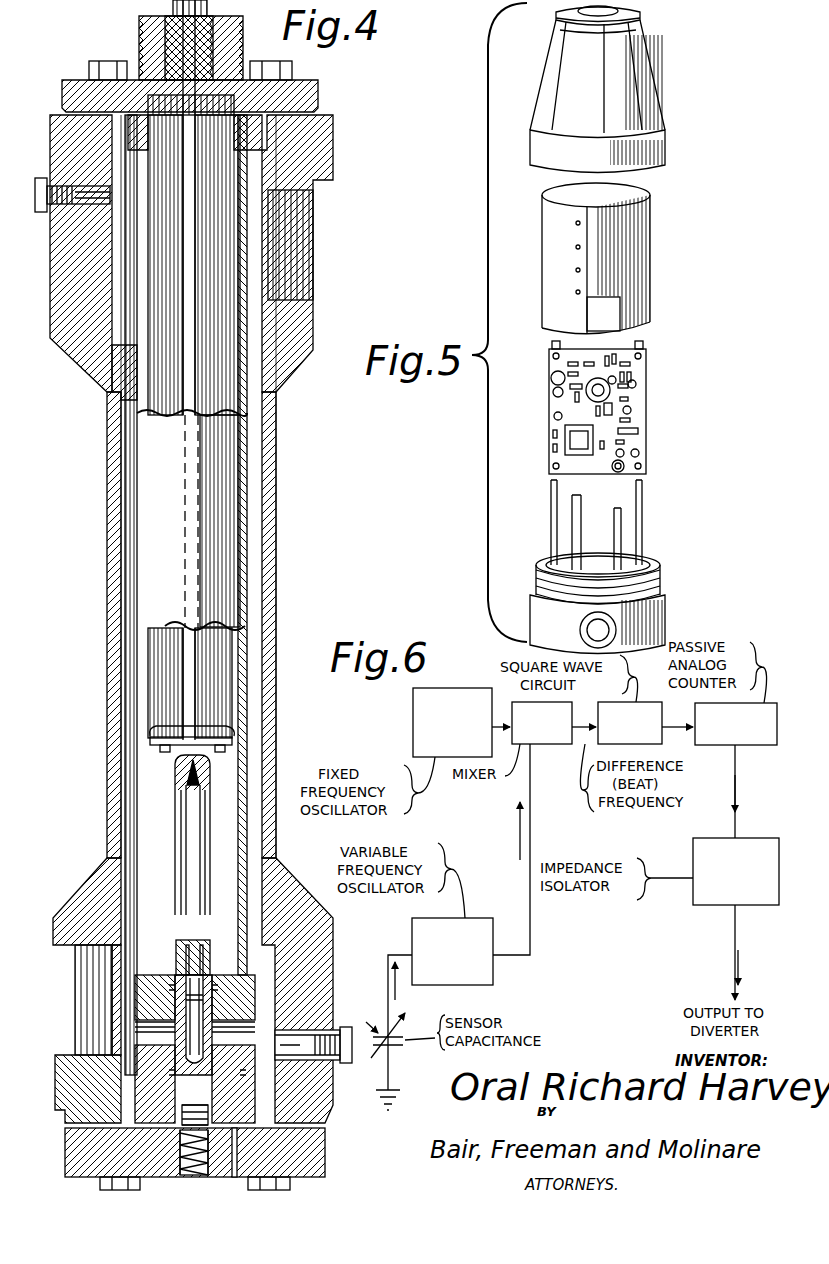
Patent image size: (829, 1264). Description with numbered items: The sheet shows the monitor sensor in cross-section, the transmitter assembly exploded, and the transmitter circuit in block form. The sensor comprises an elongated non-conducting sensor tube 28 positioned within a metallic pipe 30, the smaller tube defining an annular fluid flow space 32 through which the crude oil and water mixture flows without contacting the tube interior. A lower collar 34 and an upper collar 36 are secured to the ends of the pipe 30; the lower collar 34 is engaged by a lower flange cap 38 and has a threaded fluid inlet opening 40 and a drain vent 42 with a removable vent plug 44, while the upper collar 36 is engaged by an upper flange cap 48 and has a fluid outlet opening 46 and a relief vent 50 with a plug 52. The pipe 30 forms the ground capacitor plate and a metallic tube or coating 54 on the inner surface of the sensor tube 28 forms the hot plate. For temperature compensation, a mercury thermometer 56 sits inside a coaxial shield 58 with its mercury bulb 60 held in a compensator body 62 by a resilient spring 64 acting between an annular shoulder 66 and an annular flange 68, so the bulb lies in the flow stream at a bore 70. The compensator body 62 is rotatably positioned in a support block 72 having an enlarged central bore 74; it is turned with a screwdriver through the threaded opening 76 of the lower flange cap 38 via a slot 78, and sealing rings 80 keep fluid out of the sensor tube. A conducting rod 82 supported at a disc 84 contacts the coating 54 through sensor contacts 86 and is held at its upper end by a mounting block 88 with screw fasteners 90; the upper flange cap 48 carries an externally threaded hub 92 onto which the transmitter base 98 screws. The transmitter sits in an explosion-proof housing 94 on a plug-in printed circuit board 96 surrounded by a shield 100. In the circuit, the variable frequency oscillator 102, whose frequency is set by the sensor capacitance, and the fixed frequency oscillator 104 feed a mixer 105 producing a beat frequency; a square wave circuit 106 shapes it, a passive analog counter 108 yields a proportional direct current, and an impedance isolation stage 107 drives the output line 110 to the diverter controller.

In FIG. 4, the sensor tube 28 is at (240, 547).
In FIG. 4, the metallic pipe 30 is at (276, 592).
In FIG. 4, the annular fluid flow space 32 is at (128, 545).
In FIG. 4, the lower collar 34 is at (335, 944).
In FIG. 4, the upper collar 36 is at (334, 155).
In FIG. 4, the lower flange cap 38 is at (65, 1147).
In FIG. 4, the fluid inlet opening 40 is at (75, 1028).
In FIG. 4, the drain vent 42 is at (318, 1035).
In FIG. 4, the vent plug 44 is at (346, 1065).
In FIG. 4, the fluid outlet opening 46 is at (305, 268).
In FIG. 4, the upper flange cap 48 is at (318, 96).
In FIG. 4, the relief vent 50 is at (88, 197).
In FIG. 4, the plug 52 is at (38, 180).
In FIG. 4, the metallic tube or coating 54 is at (150, 398).
In FIG. 6, the metallic tube or coating 54 is at (395, 1026).
In FIG. 4, the mercury thermometer 56 is at (193, 845).
In FIG. 4, the coaxial shield 58 is at (205, 810).
In FIG. 4, the mercury bulb 60 is at (200, 1048).
In FIG. 4, the compensator body 62 is at (175, 1078).
In FIG. 4, the resilient spring 64 is at (205, 985).
In FIG. 4, the annular shoulder 66 is at (210, 1008).
In FIG. 4, the annular flange 68 is at (195, 958).
In FIG. 4, the bore 70 is at (205, 1058).
In FIG. 4, the support block 72 is at (145, 1000).
In FIG. 4, the enlarged central bore 74 is at (147, 1030).
In FIG. 4, the internally threaded opening 76 is at (185, 1160).
In FIG. 4, the slot 78 is at (196, 1125).
In FIG. 4, the sealing rings 80 is at (215, 995).
In FIG. 4, the conducting rod 82 is at (195, 283).
In FIG. 4, the disc 84 is at (206, 740).
In FIG. 4, the sensor contacts 86 is at (152, 740).
In FIG. 4, the mounting block 88 is at (165, 26).
In FIG. 4, the screw fasteners 90 is at (207, 8).
In FIG. 4, the externally threaded hub 92 is at (139, 30).
In FIG. 5, the housing 94 is at (650, 77).
In FIG. 5, the plug-in printed circuit board 96 is at (646, 365).
In FIG. 5, the transmitter base 98 is at (665, 590).
In FIG. 5, the shield 100 is at (650, 268).
In FIG. 6, the variable frequency oscillator 102 is at (469, 960).
In FIG. 6, the fixed frequency oscillator 104 is at (470, 726).
In FIG. 6, the mixer 105 is at (560, 734).
In FIG. 6, the square wave circuit 106 is at (647, 734).
In FIG. 6, the impedance isolation stage 107 is at (752, 881).
In FIG. 6, the passive analog counter 108 is at (752, 734).
In FIG. 6, the output line 110 is at (735, 922).